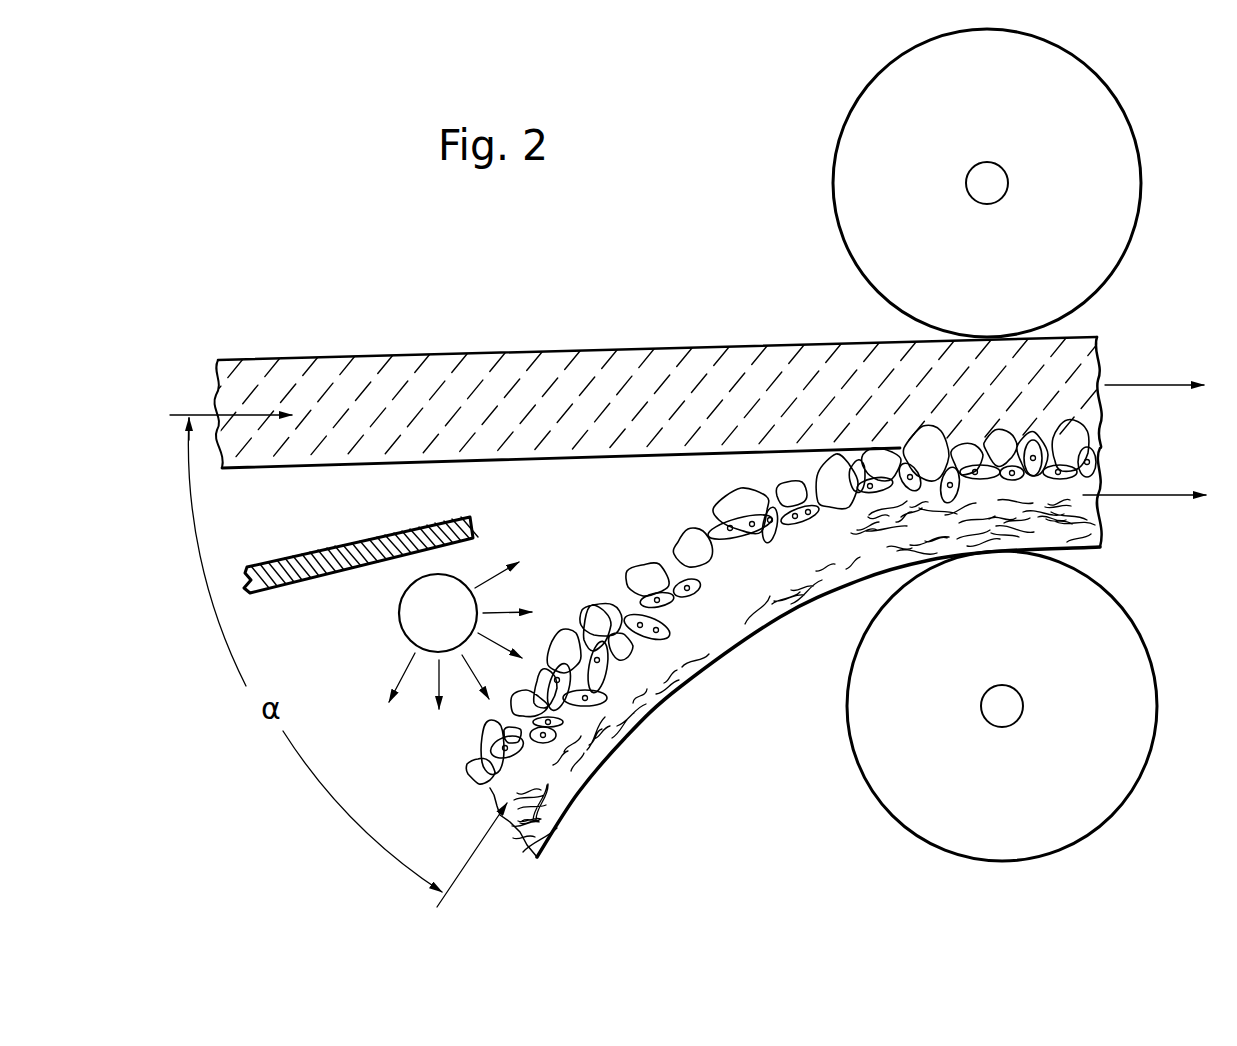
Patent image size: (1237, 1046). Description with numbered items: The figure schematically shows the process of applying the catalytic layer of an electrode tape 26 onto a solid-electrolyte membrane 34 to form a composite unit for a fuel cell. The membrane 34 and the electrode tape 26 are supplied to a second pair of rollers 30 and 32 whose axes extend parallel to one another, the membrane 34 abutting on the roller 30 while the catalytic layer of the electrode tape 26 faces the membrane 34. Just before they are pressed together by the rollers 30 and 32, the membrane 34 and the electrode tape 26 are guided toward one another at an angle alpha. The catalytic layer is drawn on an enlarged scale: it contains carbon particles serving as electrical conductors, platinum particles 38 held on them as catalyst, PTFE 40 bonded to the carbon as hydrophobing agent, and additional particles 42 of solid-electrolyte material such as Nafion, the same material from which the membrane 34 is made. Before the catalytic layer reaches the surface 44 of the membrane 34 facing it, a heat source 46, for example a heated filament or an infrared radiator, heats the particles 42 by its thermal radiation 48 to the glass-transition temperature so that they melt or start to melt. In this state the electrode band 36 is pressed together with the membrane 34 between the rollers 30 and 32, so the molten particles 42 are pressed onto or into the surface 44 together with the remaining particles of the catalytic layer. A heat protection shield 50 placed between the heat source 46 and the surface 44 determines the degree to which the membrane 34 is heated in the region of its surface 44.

The electrode tape 26 is at (481, 795).
The roller 30 is at (1123, 170).
The roller 32 is at (1128, 752).
The membrane 34 is at (378, 392).
The electrode band 36 is at (567, 800).
The platinum particles 38 is at (565, 723).
The PTFE 40 is at (545, 728).
The particles of solid-electrolyte material 42 is at (523, 692).
The surface of the membrane 44 is at (583, 460).
The heat source 46 is at (412, 617).
The thermal radiation 48 is at (515, 610).
The heat protection shield 50 is at (383, 548).